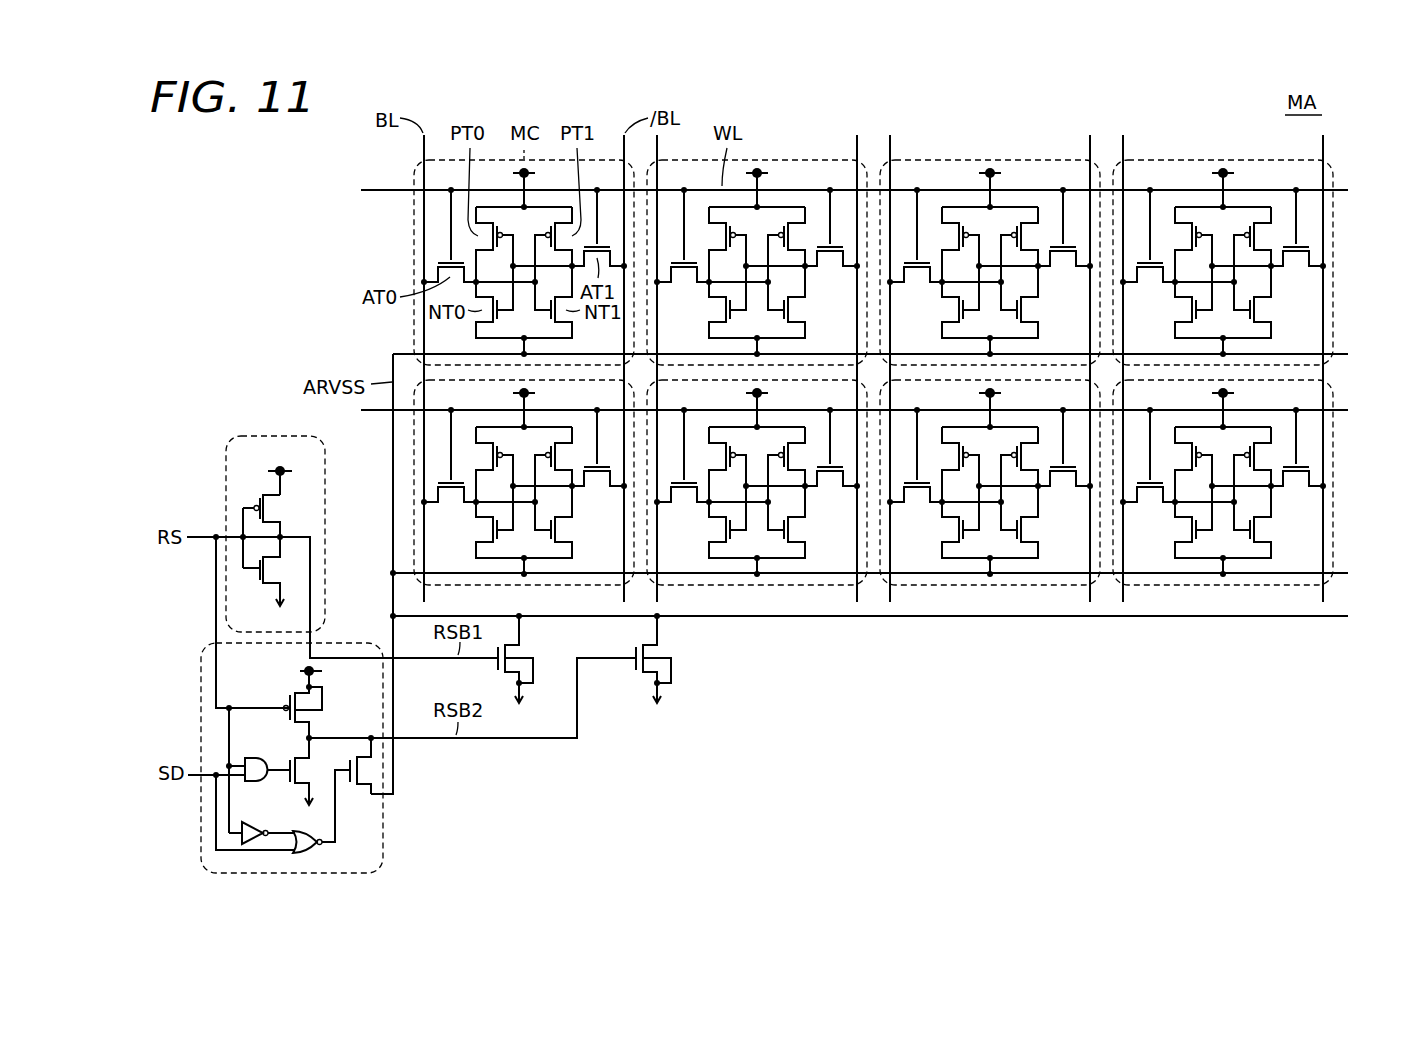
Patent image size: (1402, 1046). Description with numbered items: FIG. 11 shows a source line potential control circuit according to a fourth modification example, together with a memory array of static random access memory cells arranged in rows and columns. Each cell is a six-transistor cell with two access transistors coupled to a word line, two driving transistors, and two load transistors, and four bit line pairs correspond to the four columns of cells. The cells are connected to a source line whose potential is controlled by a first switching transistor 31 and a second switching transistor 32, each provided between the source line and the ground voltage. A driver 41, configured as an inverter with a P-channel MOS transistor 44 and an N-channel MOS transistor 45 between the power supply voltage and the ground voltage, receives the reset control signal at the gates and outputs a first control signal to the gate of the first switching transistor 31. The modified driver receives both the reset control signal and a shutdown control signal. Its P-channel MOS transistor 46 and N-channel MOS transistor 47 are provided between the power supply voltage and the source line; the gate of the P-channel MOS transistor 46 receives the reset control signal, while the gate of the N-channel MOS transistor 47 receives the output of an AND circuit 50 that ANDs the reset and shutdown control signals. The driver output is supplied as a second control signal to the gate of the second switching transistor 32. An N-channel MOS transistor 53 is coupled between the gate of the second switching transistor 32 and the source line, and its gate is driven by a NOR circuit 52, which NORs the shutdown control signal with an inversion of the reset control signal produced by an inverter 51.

The first switching transistor 31 is at (521, 652).
The second switching transistor 32 is at (659, 652).
The driver 41 is at (252, 534).
The P-channel MOS transistor 44 is at (276, 508).
The N-channel MOS transistor 45 is at (278, 587).
The P-channel MOS transistor 46 is at (297, 690).
The N-channel MOS transistor 47 is at (298, 751).
The AND circuit 50 is at (250, 756).
The inverter 51 is at (253, 823).
The NOR circuit 52 is at (316, 852).
The N-channel MOS transistor 53 is at (362, 792).